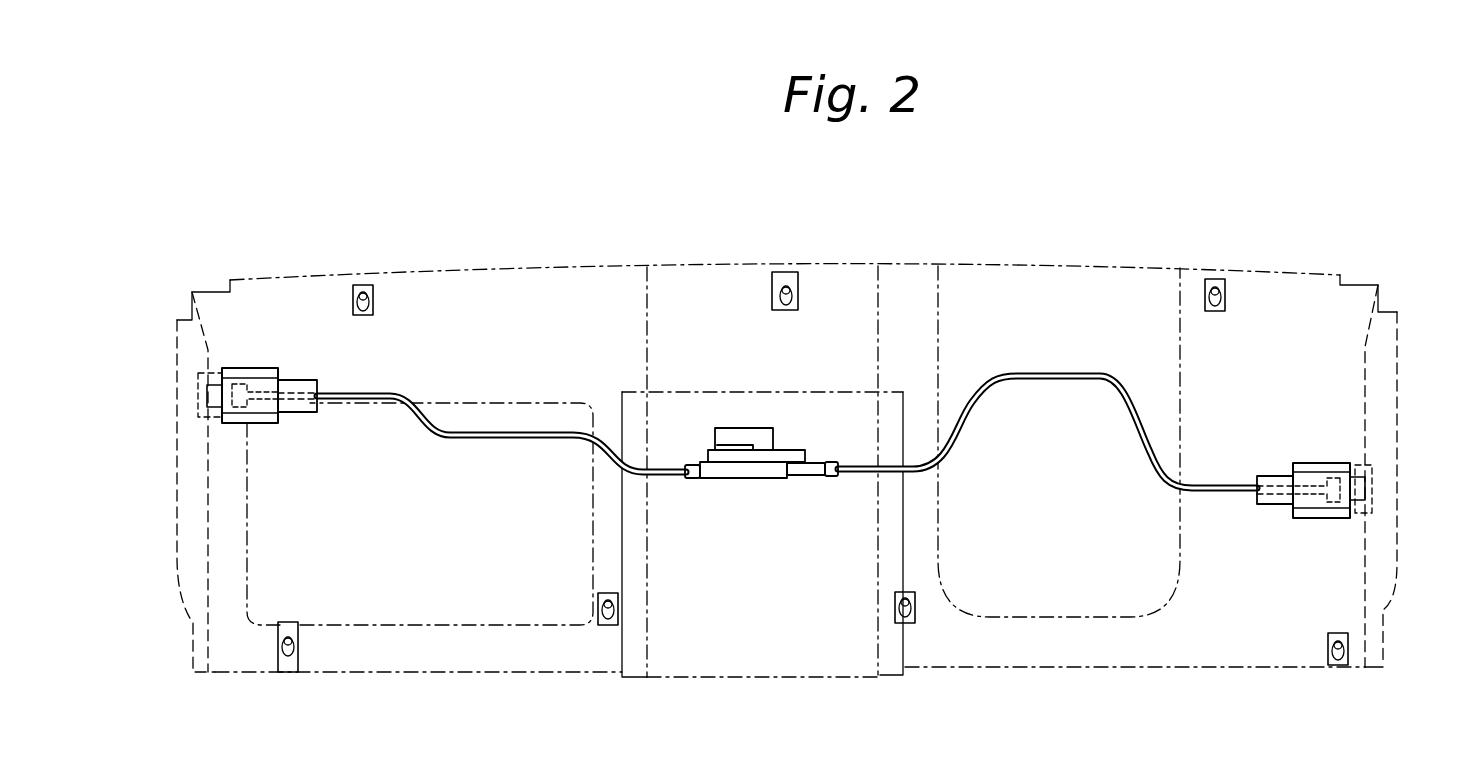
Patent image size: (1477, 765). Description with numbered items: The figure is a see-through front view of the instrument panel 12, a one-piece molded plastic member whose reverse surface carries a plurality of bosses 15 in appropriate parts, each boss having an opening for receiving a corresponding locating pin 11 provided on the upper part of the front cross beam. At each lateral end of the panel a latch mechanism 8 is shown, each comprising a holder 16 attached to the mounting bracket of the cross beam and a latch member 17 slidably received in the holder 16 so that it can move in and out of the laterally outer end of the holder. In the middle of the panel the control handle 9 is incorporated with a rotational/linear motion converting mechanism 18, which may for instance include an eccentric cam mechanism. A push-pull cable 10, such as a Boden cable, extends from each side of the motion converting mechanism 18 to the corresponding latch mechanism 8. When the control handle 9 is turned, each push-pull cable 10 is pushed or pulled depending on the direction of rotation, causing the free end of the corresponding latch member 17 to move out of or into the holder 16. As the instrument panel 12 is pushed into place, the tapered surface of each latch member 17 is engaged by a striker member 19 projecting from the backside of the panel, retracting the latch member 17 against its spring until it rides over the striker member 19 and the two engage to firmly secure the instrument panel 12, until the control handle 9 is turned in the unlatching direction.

The latch mechanism 8 is at (230, 428).
The control handle 9 is at (740, 427).
The push-pull cable 10 is at (508, 438).
The locating pin 11 is at (360, 313).
The instrument panel 12 is at (968, 264).
The boss 15 is at (373, 287).
The holder 16 is at (254, 380).
The latch member 17 is at (213, 417).
The rotational/linear motion converting mechanism 18 is at (752, 469).
The striker member 19 is at (200, 395).